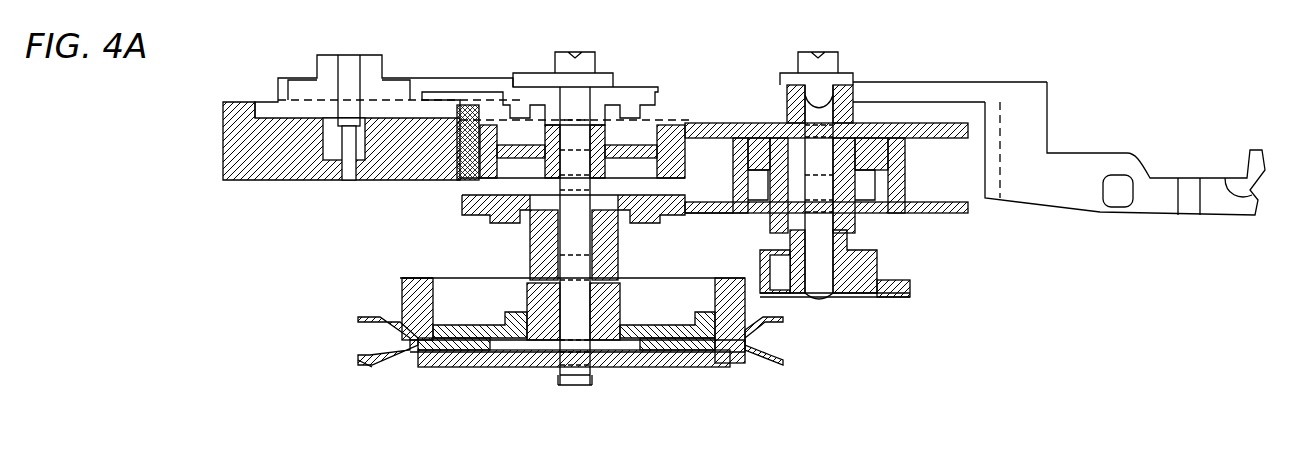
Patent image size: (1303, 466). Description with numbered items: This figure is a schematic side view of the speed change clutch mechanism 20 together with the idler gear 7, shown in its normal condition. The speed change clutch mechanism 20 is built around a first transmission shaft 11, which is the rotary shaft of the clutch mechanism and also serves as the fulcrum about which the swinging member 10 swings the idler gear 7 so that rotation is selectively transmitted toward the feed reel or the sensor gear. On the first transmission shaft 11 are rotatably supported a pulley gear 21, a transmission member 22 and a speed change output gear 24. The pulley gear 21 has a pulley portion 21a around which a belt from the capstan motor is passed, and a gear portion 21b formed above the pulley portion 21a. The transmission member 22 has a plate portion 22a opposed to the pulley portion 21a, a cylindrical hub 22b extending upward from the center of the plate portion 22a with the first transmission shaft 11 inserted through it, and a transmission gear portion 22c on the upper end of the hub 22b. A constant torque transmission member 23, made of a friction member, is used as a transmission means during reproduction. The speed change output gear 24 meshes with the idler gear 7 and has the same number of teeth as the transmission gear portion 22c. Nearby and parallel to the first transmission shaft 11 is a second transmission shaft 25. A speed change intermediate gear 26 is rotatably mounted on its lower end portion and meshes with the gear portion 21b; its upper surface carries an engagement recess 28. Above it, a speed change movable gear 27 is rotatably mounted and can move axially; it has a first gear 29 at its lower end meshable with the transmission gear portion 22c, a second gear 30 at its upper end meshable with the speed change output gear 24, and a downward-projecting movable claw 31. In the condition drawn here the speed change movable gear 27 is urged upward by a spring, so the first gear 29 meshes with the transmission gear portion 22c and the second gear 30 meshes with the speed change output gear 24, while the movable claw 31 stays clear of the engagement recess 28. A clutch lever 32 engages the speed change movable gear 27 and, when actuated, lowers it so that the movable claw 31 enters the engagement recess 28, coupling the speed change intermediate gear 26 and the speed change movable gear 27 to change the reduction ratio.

The idler gear 7 is at (237, 102).
The swinging member 10 is at (440, 78).
The first transmission shaft 11 is at (600, 87).
The speed change clutch mechanism 20 is at (300, 248).
The pulley gear 21 is at (338, 346).
The pulley portion 21a is at (370, 367).
The gear portion 21b is at (402, 295).
The transmission member 22 is at (617, 388).
The plate portion 22a is at (510, 367).
The cylindrical hub 22b is at (540, 278).
The transmission gear portion 22c is at (462, 208).
The constant torque transmission member 23 is at (435, 367).
The speed change output gear 24 is at (664, 125).
The second transmission shaft 25 is at (835, 90).
The speed change intermediate gear 26 is at (910, 288).
The speed change movable gear 27 is at (905, 175).
The engagement recess 28 is at (774, 270).
The first gear 29 is at (715, 213).
The second gear 30 is at (731, 123).
The movable claw 31 is at (772, 230).
The clutch lever 32 is at (1085, 153).